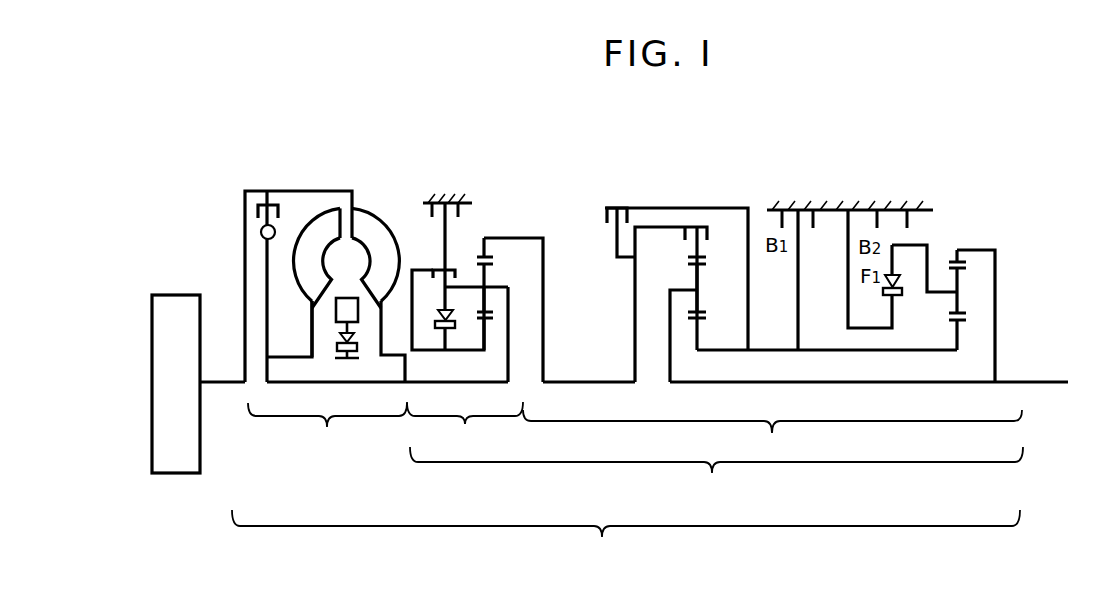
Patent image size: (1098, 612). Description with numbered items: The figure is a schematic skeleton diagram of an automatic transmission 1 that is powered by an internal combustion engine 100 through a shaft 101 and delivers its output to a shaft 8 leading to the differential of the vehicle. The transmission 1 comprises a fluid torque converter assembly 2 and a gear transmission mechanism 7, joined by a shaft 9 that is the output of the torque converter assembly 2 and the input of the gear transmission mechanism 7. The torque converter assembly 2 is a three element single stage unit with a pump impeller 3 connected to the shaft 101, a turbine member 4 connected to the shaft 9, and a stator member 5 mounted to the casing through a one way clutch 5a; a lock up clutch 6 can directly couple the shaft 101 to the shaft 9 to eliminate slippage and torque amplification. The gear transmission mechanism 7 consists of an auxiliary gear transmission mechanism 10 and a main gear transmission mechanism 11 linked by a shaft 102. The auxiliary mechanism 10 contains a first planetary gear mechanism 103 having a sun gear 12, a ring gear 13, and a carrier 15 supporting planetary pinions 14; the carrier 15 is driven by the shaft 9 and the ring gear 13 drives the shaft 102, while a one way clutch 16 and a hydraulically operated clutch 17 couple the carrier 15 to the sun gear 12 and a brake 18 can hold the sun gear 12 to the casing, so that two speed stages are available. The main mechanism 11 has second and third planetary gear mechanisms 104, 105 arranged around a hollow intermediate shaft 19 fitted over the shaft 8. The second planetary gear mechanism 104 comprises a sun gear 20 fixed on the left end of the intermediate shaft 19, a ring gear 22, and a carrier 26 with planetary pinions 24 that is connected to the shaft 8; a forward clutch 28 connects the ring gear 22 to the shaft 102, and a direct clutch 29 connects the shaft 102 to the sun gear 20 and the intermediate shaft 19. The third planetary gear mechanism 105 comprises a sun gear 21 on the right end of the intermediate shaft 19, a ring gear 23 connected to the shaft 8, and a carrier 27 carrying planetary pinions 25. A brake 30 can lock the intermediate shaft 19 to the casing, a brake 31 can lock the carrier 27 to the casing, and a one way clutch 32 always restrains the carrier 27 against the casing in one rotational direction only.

The automatic transmission 1 is at (626, 537).
The fluid torque converter assembly 2 is at (326, 322).
The pump impeller 3 is at (367, 218).
The turbine member 4 is at (312, 292).
The stator member 5 is at (340, 308).
The one way clutch 5a is at (356, 340).
The lock up clutch 6 is at (268, 302).
The gear transmission mechanism 7 is at (716, 474).
The power output shaft 8 is at (1053, 381).
The shaft 9 is at (428, 384).
The auxiliary gear transmission mechanism 10 is at (465, 427).
The main gear transmission mechanism 11 is at (772, 432).
The sun gear 12 is at (489, 319).
The ring gear 13 is at (484, 253).
The planetary pinions 14 is at (493, 261).
The carrier 15 is at (508, 316).
The one way clutch F0 16 is at (452, 311).
The clutch C0 17 is at (443, 270).
The brake B0 18 is at (437, 199).
The intermediate shaft 19 is at (878, 352).
The sun gear 20 is at (705, 318).
The sun gear 21 is at (961, 327).
The ring gear 22 is at (705, 259).
The ring gear 23 is at (962, 258).
The planetary pinions 24 is at (698, 297).
The planetary pinions 25 is at (960, 306).
The carrier 26 is at (668, 307).
The carrier 27 is at (930, 262).
The clutch C1 28 is at (695, 224).
The clutch C2 29 is at (617, 205).
The brake B1 30 is at (806, 208).
The brake B2 31 is at (909, 216).
The one-way clutch F1 32 is at (902, 294).
The internal combustion engine 100 is at (187, 475).
The power output shaft 101 is at (223, 381).
The shaft 102 is at (587, 377).
The first planetary gear mechanism 103 is at (512, 233).
The second planetary gear mechanism 104 is at (731, 202).
The third planetary gear mechanism 105 is at (982, 243).